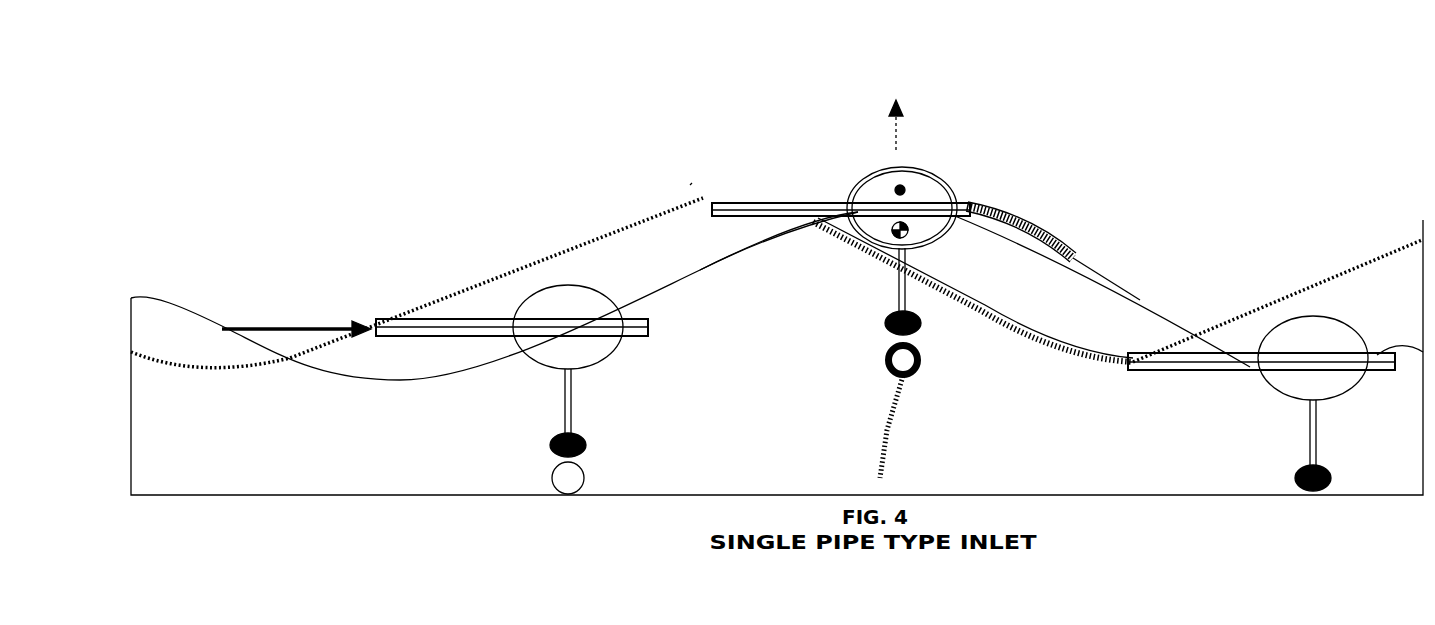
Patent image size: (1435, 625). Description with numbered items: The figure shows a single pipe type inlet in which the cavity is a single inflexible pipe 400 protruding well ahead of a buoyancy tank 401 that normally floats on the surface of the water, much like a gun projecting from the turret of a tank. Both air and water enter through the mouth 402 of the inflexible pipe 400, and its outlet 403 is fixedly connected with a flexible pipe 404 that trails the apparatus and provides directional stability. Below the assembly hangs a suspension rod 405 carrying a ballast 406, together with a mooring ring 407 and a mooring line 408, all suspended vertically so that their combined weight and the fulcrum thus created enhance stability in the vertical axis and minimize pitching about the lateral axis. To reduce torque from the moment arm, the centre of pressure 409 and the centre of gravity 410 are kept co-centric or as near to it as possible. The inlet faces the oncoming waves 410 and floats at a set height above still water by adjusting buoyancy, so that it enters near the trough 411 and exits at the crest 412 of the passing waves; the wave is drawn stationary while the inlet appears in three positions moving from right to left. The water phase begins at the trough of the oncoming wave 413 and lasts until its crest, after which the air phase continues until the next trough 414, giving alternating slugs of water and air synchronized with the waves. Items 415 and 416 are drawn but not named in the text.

The inflexible pipe 400 is at (690, 185).
The buoyancy tank 401 is at (862, 170).
The mouth 402 is at (693, 210).
The outlet 403 is at (965, 195).
The flexible pipe 404 is at (1043, 230).
The suspension rod 405 is at (888, 290).
The ballast 406 is at (932, 315).
The mooring ring 407 is at (925, 361).
The mooring line 408 is at (878, 438).
The centre of pressure 409 is at (208, 318).
The oncoming waves 410 is at (318, 320).
The trough 411 is at (1205, 338).
The crest 412 is at (810, 238).
The oncoming wave 413 is at (1052, 362).
The next trough 414 is at (552, 237).
The air vent 415 is at (905, 185).
The ball valve 416 is at (908, 238).